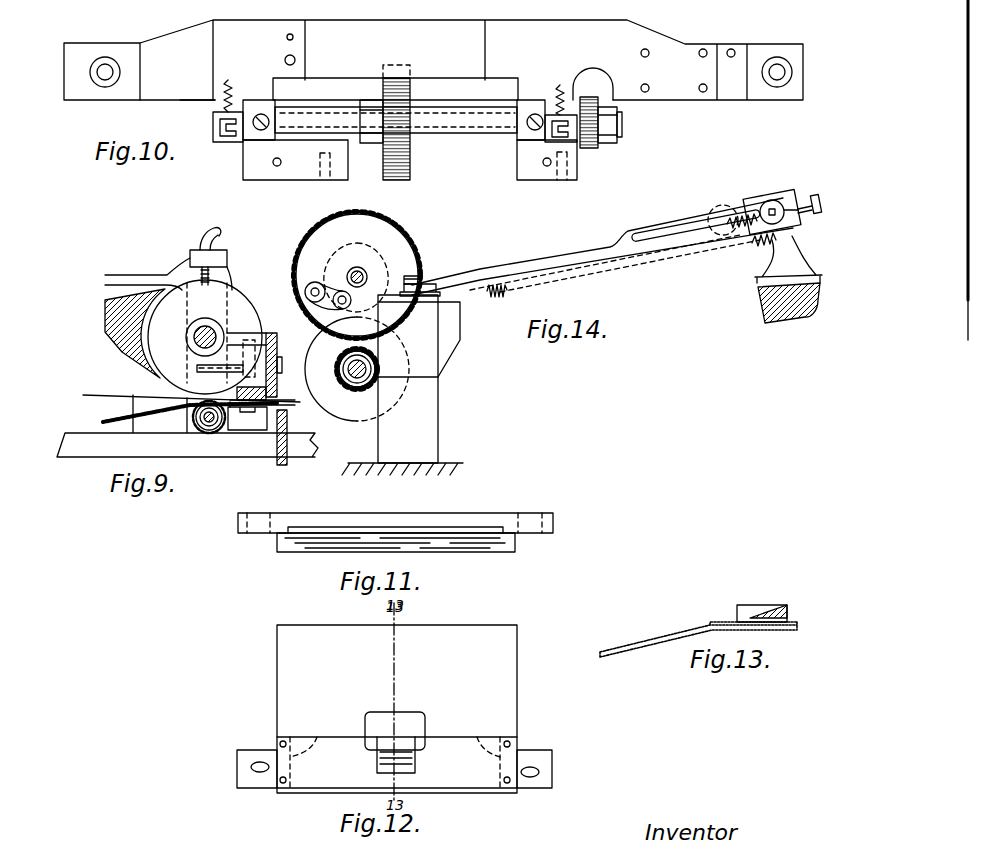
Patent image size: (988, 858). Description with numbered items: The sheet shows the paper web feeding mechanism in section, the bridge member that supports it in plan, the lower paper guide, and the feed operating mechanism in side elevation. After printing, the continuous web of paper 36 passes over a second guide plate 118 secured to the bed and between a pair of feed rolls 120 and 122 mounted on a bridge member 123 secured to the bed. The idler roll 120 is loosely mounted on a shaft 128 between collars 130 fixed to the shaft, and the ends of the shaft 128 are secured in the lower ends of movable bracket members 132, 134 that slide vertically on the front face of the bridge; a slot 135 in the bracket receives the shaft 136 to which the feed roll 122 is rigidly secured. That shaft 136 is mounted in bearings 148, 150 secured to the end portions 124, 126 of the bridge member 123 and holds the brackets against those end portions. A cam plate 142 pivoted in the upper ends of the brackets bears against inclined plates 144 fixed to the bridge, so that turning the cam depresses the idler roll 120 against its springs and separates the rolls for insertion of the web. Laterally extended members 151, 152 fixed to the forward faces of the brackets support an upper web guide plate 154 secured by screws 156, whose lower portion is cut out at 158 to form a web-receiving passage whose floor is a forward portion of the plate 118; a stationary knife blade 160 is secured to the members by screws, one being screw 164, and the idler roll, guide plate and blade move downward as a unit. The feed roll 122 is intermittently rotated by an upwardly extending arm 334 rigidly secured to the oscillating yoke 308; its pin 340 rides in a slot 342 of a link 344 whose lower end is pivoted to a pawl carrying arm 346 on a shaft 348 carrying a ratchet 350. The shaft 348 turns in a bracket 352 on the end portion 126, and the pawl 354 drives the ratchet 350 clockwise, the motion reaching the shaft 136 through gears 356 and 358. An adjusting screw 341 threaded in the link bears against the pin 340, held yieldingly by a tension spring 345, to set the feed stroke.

In FIG. 9, the continuous web of paper 36 is at (88, 395).
In FIG. 9, the second guide plate 118 is at (110, 420).
In FIG. 11, the second guide plate 118 is at (495, 550).
In FIG. 12, the second guide plate 118 is at (507, 648).
In FIG. 13, the second guide plate 118 is at (635, 640).
In FIG. 9, the feed roll 120 is at (215, 437).
In FIG. 10, the feed roll 122 is at (412, 168).
In FIG. 9, the feed roll 122 is at (230, 298).
In FIG. 10, the bridge member 123 is at (171, 45).
In FIG. 9, the bridge member 123 is at (105, 318).
In FIG. 10, the end portion of the bridge member 124 is at (215, 100).
In FIG. 10, the end portion of the bridge member 126 is at (580, 84).
In FIG. 9, the shaft 128 is at (198, 430).
In FIG. 9, the collars 130 is at (223, 416).
In FIG. 10, the movable bracket member 132 is at (250, 100).
In FIG. 10, the movable bracket member 134 is at (528, 100).
In FIG. 9, the movable bracket member 134 is at (228, 272).
In FIG. 9, the slot 135 is at (200, 352).
In FIG. 10, the shaft 136 is at (462, 118).
In FIG. 9, the shaft 136 is at (223, 328).
In FIG. 9, the cam plate 142 is at (190, 258).
In FIG. 9, the inclined plates 144 is at (192, 250).
In FIG. 10, the bearing 148 is at (225, 142).
In FIG. 10, the bearing 150 is at (565, 140).
In FIG. 10, the laterally extended member 151 is at (303, 172).
In FIG. 10, the laterally extended member 152 is at (535, 175).
In FIG. 9, the laterally extended member 152 is at (287, 359).
In FIG. 9, the upper web guide plate 154 is at (268, 391).
In FIG. 11, the upper web guide plate 154 is at (478, 517).
In FIG. 12, the upper web guide plate 154 is at (515, 755).
In FIG. 13, the upper web guide plate 154 is at (745, 605).
In FIG. 9, the screws 156 is at (273, 428).
In FIG. 12, the screws 156 is at (258, 762).
In FIG. 11, the cut-out 158 is at (363, 527).
In FIG. 12, the cut-out 158 is at (318, 735).
In FIG. 13, the cut-out 158 is at (790, 612).
In FIG. 9, the stationary knife blade 160 is at (280, 355).
In FIG. 9, the screw 164 is at (345, 363).
In FIG. 14, the oscillating yoke 308 is at (760, 310).
In FIG. 14, the upwardly extending arm 334 is at (765, 258).
In FIG. 14, the screw or pin 340 is at (716, 215).
In FIG. 14, the adjusting screw 341 is at (794, 195).
In FIG. 14, the slot 342 is at (652, 234).
In FIG. 14, the link 344 is at (573, 252).
In FIG. 14, the tension spring 345 is at (492, 283).
In FIG. 14, the pawl carrying arm 346 is at (318, 282).
In FIG. 14, the shaft 348 is at (358, 267).
In FIG. 14, the ratchet 350 is at (372, 254).
In FIG. 14, the bracket 352 is at (410, 260).
In FIG. 14, the pawl 354 is at (345, 309).
In FIG. 14, the gear 356 is at (421, 267).
In FIG. 10, the gear 358 is at (600, 128).
In FIG. 9, the gear 358 is at (345, 378).